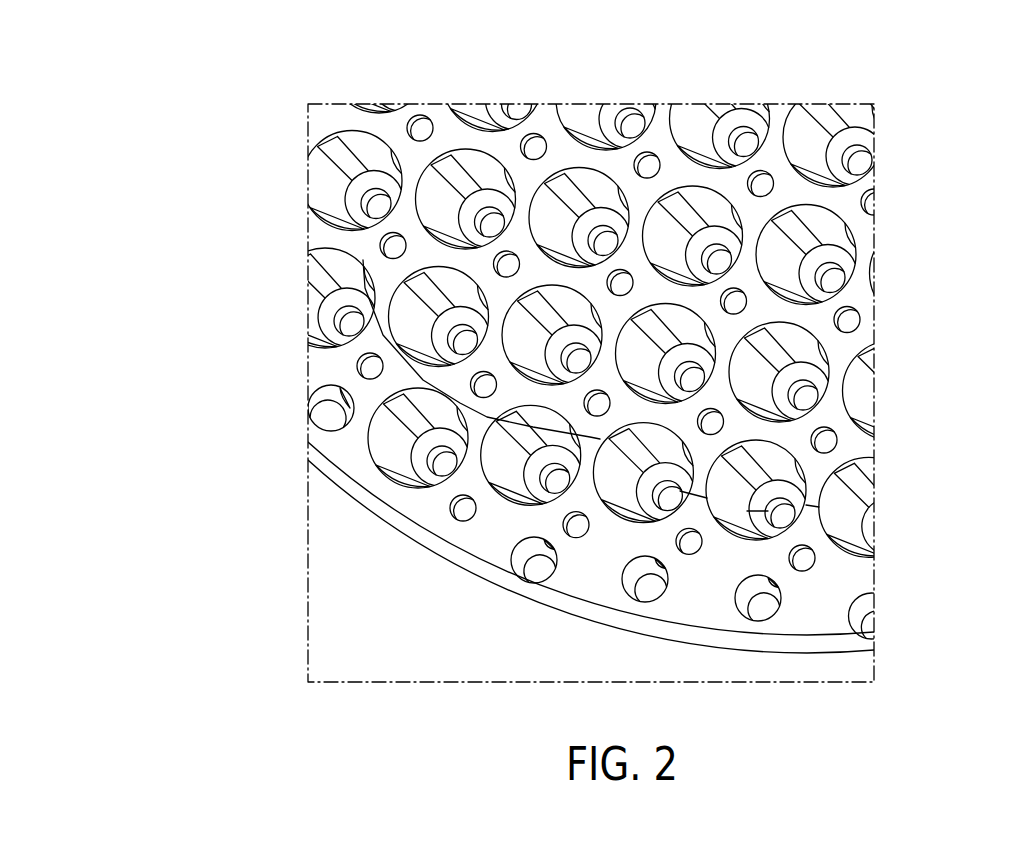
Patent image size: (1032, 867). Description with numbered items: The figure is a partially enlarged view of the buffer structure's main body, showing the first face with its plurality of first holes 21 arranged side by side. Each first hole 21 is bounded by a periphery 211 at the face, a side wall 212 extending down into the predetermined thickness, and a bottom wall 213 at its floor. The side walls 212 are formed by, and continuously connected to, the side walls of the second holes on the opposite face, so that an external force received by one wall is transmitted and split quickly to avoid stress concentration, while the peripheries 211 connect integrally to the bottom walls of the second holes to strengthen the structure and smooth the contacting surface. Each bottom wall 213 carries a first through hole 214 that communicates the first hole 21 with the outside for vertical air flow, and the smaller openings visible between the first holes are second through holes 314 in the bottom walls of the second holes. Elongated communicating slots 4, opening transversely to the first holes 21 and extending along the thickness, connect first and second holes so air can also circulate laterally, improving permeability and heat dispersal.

The first hole 21 is at (720, 222).
The periphery of first hole 211 is at (828, 382).
The side wall of first hole 212 is at (436, 206).
The bottom wall of first hole 213 is at (352, 203).
The first through hole 214 is at (322, 326).
The second through hole 314 is at (648, 152).
The communicating slot 4 is at (763, 475).